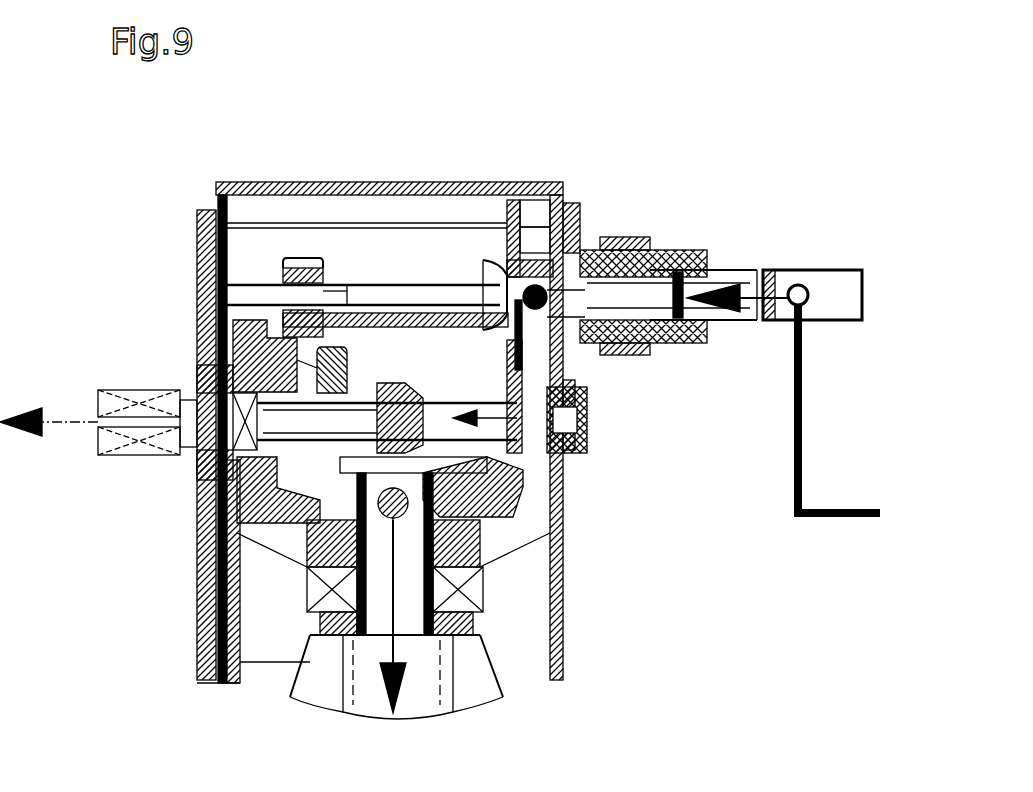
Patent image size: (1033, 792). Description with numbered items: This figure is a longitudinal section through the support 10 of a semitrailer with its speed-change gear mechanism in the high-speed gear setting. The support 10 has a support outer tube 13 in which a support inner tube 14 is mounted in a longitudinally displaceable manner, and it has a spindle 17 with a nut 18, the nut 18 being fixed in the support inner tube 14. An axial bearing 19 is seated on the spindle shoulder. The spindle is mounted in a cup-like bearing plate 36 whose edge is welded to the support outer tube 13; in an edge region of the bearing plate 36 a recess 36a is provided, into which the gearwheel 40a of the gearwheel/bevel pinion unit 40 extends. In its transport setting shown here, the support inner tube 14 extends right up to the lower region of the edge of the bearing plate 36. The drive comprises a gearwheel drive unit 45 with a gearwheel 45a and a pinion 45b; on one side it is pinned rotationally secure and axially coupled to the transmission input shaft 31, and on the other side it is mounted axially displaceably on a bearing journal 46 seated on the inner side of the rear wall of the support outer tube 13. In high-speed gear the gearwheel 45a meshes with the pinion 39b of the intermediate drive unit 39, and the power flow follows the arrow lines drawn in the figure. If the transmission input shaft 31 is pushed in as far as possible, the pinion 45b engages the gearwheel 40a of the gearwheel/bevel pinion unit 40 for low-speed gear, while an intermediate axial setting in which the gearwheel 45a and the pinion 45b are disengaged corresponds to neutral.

The support 10 is at (565, 147).
The support outer tube 13 is at (661, 437).
The support inner tube 14 is at (506, 615).
The spindle 17 is at (370, 710).
The nut 18 is at (240, 663).
The axial bearing 19 is at (533, 699).
The transmission input shaft 31 is at (722, 272).
The bearing plate 36 is at (600, 557).
The recess 36a is at (310, 455).
The intermediate drive unit 39 is at (511, 396).
The pinion 39b is at (569, 529).
The gearwheel/bevel pinion unit 40 is at (283, 351).
The gearwheel 40a is at (255, 488).
The gearwheel drive unit 45 is at (275, 220).
The gearwheel 45a is at (570, 183).
The pinion 45b is at (283, 265).
The bearing journal 46 is at (240, 292).